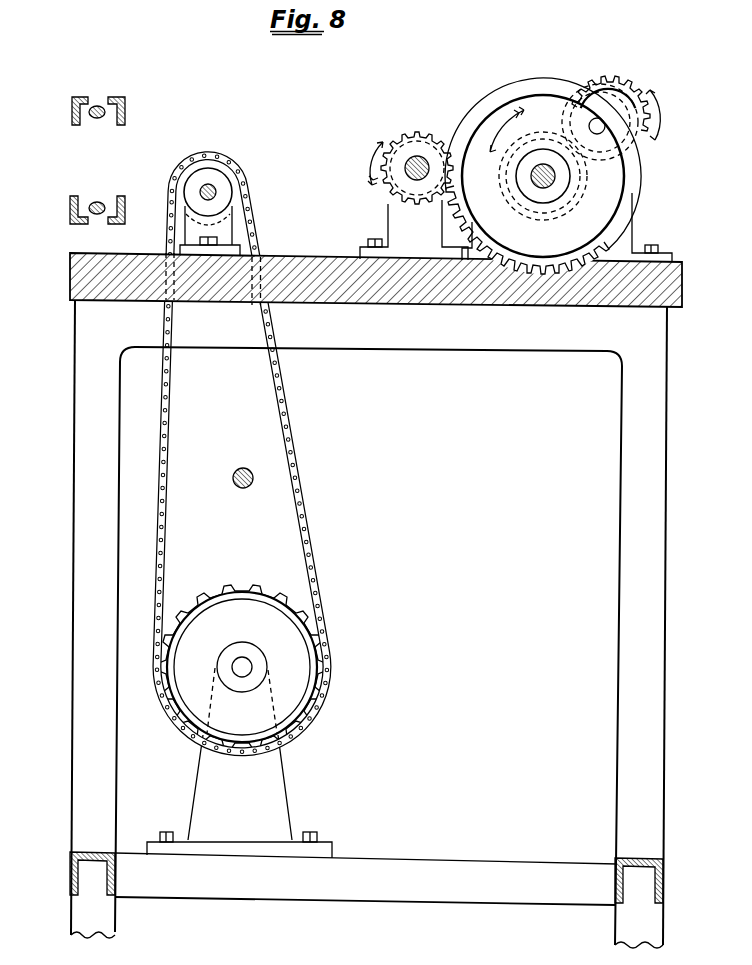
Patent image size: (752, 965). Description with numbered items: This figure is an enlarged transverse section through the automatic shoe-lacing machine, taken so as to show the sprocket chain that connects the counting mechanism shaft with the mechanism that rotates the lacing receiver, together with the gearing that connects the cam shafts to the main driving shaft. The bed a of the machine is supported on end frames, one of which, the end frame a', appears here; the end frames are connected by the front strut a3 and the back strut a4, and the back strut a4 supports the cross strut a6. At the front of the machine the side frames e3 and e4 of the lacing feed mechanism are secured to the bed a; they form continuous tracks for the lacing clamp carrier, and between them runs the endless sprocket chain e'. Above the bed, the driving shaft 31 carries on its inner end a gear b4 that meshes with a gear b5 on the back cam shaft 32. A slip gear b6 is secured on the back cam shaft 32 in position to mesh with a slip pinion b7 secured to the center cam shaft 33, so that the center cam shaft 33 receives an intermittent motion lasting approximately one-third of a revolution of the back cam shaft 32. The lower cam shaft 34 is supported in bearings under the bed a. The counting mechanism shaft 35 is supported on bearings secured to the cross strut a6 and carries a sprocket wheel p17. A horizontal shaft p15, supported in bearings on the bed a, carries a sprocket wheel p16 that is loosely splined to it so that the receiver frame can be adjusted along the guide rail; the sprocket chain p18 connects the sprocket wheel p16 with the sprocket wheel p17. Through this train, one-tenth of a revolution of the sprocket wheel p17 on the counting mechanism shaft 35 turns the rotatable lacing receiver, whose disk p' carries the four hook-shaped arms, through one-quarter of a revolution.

The bed a is at (376, 588).
The end frame a' is at (373, 646).
The front strut a3 is at (70, 880).
The back strut a4 is at (663, 876).
The cross strut a6 is at (468, 862).
The gear b4 is at (613, 84).
The gear b5 is at (587, 200).
The slip gear b6 is at (491, 106).
The slip pinion b7 is at (420, 143).
The driving shaft 31 is at (600, 134).
The back cam shaft 32 is at (543, 190).
The center cam shaft 33 is at (408, 175).
The lower cam shaft 34 is at (242, 470).
The counting mechanism shaft 35 is at (242, 657).
The horizontal shaft p15 is at (200, 192).
The sprocket wheel p16 is at (222, 172).
The sprocket wheel p17 is at (243, 592).
The sprocket chain p18 is at (298, 468).
The disk p' is at (239, 763).
The side frame e3 is at (77, 96).
The side frame e4 is at (118, 97).
The endless sprocket chain e' is at (95, 160).